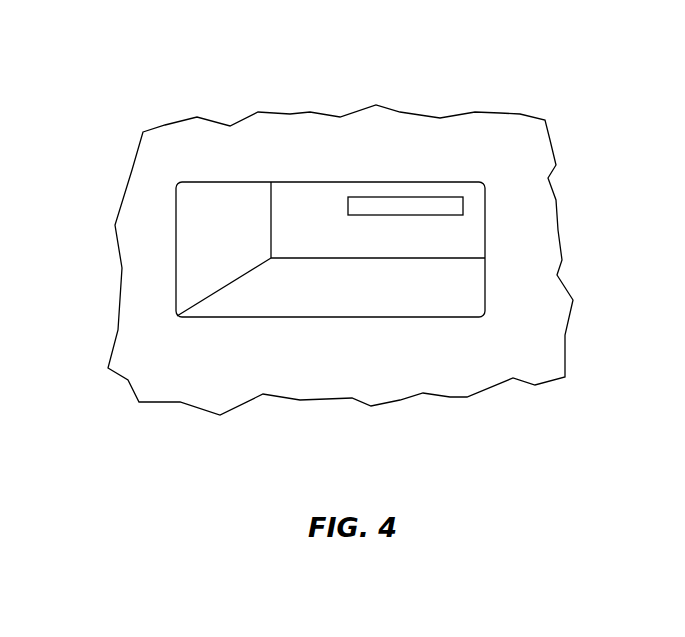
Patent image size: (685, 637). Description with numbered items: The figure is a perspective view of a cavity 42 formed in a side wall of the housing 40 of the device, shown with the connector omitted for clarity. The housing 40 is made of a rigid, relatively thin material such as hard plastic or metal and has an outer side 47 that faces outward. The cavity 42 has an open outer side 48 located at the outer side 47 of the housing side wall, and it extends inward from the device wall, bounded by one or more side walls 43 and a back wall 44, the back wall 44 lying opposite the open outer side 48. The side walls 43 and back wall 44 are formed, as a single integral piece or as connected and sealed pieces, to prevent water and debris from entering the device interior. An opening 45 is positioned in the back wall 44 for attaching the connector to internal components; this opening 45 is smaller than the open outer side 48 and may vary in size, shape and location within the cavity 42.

The housing 40 is at (535, 348).
The cavity 42 is at (413, 293).
The side walls 43 is at (287, 296).
The back wall 44 is at (297, 218).
The opening 45 is at (392, 203).
The outer side 47 is at (320, 137).
The open outer side 48 is at (470, 240).